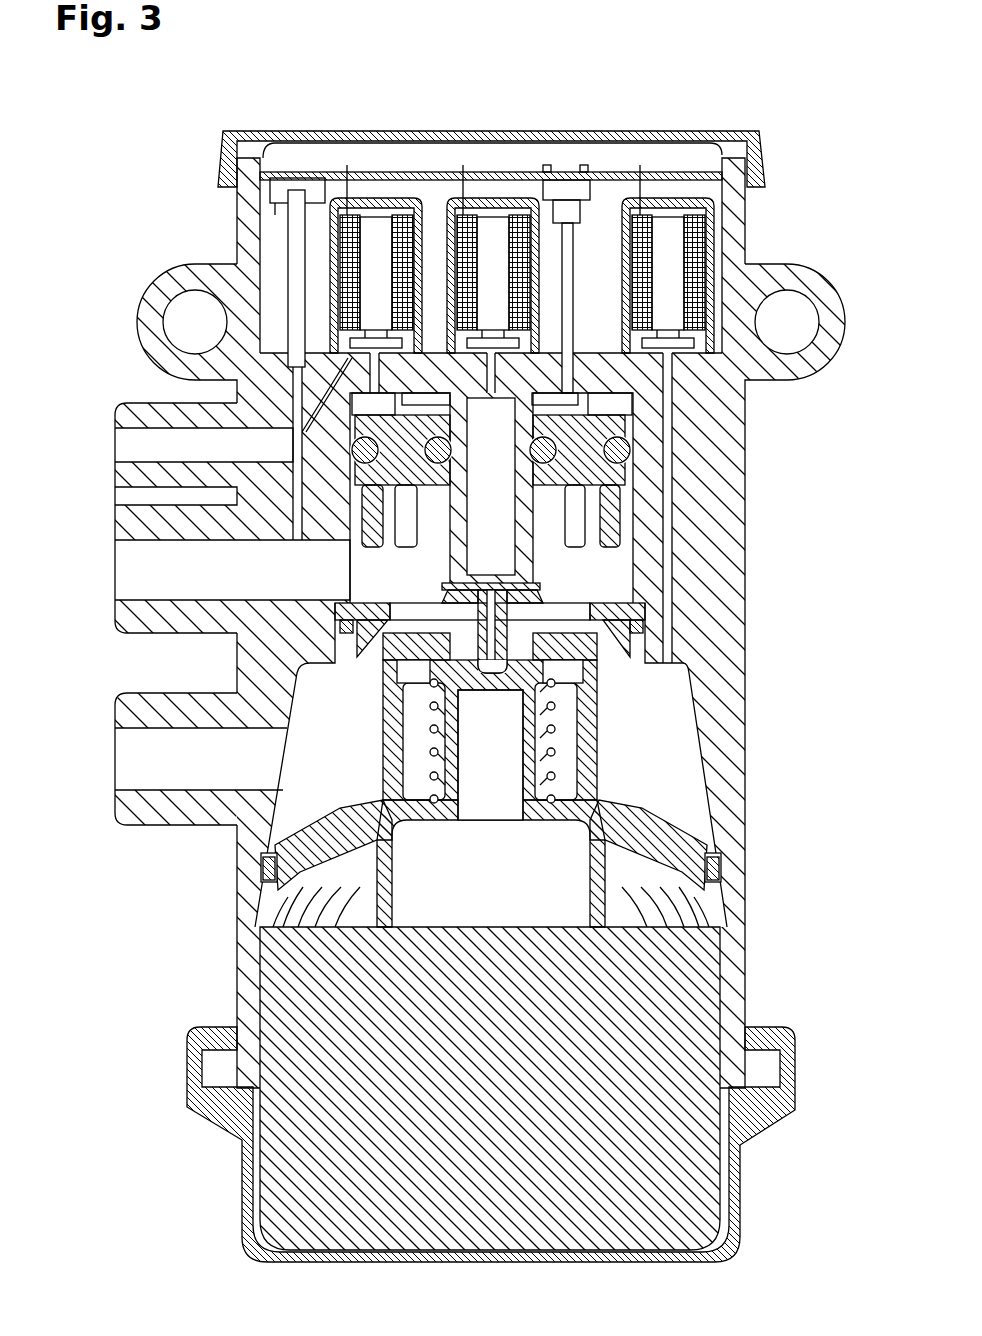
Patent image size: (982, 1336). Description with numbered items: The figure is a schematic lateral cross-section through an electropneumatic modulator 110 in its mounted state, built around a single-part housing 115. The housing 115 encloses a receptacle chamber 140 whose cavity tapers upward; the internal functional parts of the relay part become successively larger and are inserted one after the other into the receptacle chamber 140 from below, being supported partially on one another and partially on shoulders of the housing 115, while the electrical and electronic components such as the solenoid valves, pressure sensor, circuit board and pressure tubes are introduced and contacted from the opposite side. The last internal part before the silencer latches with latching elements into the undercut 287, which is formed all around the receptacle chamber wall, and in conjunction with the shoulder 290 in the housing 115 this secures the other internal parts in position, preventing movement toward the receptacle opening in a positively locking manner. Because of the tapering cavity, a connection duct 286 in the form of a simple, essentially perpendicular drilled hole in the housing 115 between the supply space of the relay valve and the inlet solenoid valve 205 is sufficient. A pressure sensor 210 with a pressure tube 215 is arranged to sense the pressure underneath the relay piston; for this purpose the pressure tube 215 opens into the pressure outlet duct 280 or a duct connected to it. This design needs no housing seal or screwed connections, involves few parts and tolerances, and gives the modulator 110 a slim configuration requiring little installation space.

The electropneumatic modulator 110 is at (176, 156).
The housing 115 is at (722, 570).
The receptacle chamber 140 is at (323, 775).
The inlet solenoid valve 205 is at (688, 230).
The pressure sensor 210 is at (273, 200).
The pressure tube 215 is at (296, 240).
The pressure outlet duct 280 is at (137, 556).
The connection duct 286 is at (665, 493).
The undercut 287 is at (742, 927).
The shoulder 290 is at (333, 594).